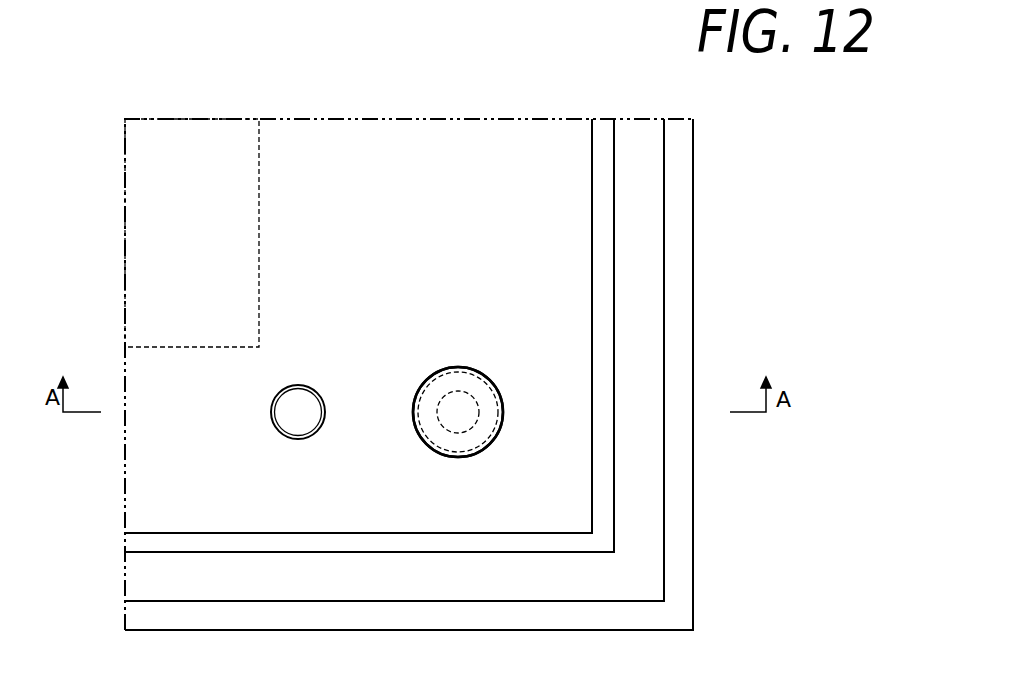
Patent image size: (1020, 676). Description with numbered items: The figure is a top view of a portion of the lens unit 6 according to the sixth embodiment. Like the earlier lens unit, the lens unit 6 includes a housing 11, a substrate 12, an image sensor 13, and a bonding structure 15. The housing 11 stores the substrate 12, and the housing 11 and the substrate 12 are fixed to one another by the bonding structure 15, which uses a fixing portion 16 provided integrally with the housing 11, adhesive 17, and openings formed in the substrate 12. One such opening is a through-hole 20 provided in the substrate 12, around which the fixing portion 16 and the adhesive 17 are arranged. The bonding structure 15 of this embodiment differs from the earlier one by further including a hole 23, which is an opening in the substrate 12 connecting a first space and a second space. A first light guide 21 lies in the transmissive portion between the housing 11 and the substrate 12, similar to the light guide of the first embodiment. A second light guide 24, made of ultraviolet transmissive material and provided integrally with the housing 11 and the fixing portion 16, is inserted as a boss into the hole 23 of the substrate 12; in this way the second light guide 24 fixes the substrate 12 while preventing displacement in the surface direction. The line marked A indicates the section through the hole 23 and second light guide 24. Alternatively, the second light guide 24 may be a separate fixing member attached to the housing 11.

The lens unit 6 is at (427, 91).
The housing 11 is at (677, 207).
The substrate 12 is at (187, 457).
The image sensor 13 is at (237, 232).
The bonding structure 15 is at (468, 368).
The fixing portion 16 is at (485, 447).
The adhesive 17 is at (418, 440).
The through-hole 20 is at (459, 416).
The first light guide 21 is at (638, 152).
The hole 23 is at (271, 402).
The second light guide 24 is at (300, 420).